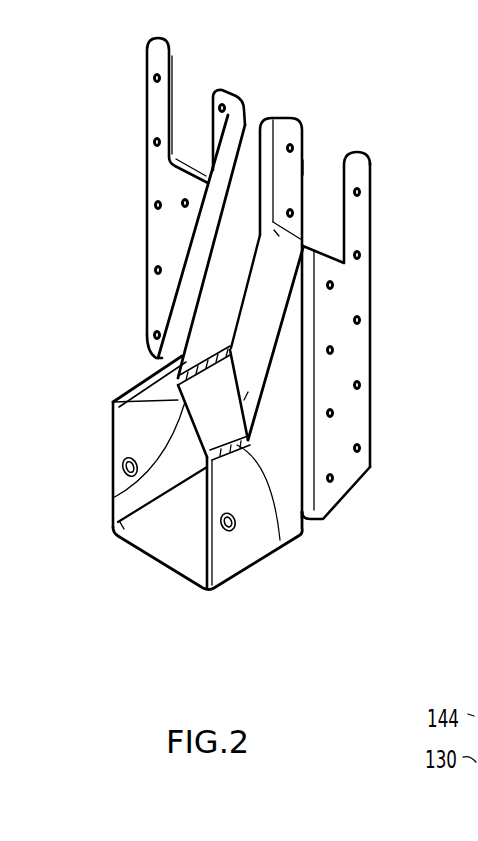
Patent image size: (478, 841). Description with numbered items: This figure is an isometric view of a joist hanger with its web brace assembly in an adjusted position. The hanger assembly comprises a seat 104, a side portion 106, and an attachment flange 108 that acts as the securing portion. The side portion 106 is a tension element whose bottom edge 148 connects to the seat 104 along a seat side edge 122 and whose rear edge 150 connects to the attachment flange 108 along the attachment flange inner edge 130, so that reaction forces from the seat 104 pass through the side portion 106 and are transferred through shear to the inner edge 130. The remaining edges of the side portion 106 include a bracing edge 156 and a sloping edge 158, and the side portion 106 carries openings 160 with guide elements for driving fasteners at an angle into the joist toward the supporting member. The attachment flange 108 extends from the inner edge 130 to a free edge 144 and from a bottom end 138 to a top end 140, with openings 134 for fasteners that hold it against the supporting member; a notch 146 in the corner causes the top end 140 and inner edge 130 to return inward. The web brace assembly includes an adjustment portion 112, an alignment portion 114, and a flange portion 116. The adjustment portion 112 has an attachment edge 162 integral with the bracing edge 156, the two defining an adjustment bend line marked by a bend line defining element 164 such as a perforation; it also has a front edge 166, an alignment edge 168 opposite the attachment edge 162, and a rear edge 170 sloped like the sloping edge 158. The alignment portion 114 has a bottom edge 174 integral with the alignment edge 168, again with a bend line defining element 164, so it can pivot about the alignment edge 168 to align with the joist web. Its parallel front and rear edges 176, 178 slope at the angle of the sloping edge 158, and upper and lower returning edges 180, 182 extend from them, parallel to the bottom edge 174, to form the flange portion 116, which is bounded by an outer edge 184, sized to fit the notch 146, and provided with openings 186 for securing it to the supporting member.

The seat 104 is at (184, 552).
The side portion 106 is at (262, 535).
The attachment flange 108 is at (356, 351).
The adjustment portion 112 is at (112, 404).
The alignment portion 114 is at (222, 258).
The flange portion 116 is at (279, 156).
The seat side edge 122 is at (137, 537).
The attachment flange inner edge 130 is at (330, 300).
The openings 134 is at (368, 455).
The bottom end 138 is at (353, 490).
The top end 140 is at (358, 156).
The attachment flange free edge 144 is at (370, 288).
The notch 146 is at (332, 188).
The bottom edge 148 is at (150, 500).
The rear edge 150 is at (297, 348).
The bracing edge 156 is at (203, 483).
The sloping edge 158 is at (265, 378).
The openings 160 is at (232, 533).
The attachment edge 162 is at (222, 446).
The bend line defining element 164 is at (113, 508).
The front edge 166 is at (185, 416).
The alignment edge 168 is at (204, 372).
The rear edge 170 is at (248, 392).
The bottom edge 174 is at (203, 355).
The front edge 176 is at (200, 278).
The rear edge 178 is at (250, 286).
The upper returning edge 180 is at (278, 117).
The lower returning edge 182 is at (275, 237).
The outer edge 184 is at (304, 170).
The openings 186 is at (293, 136).